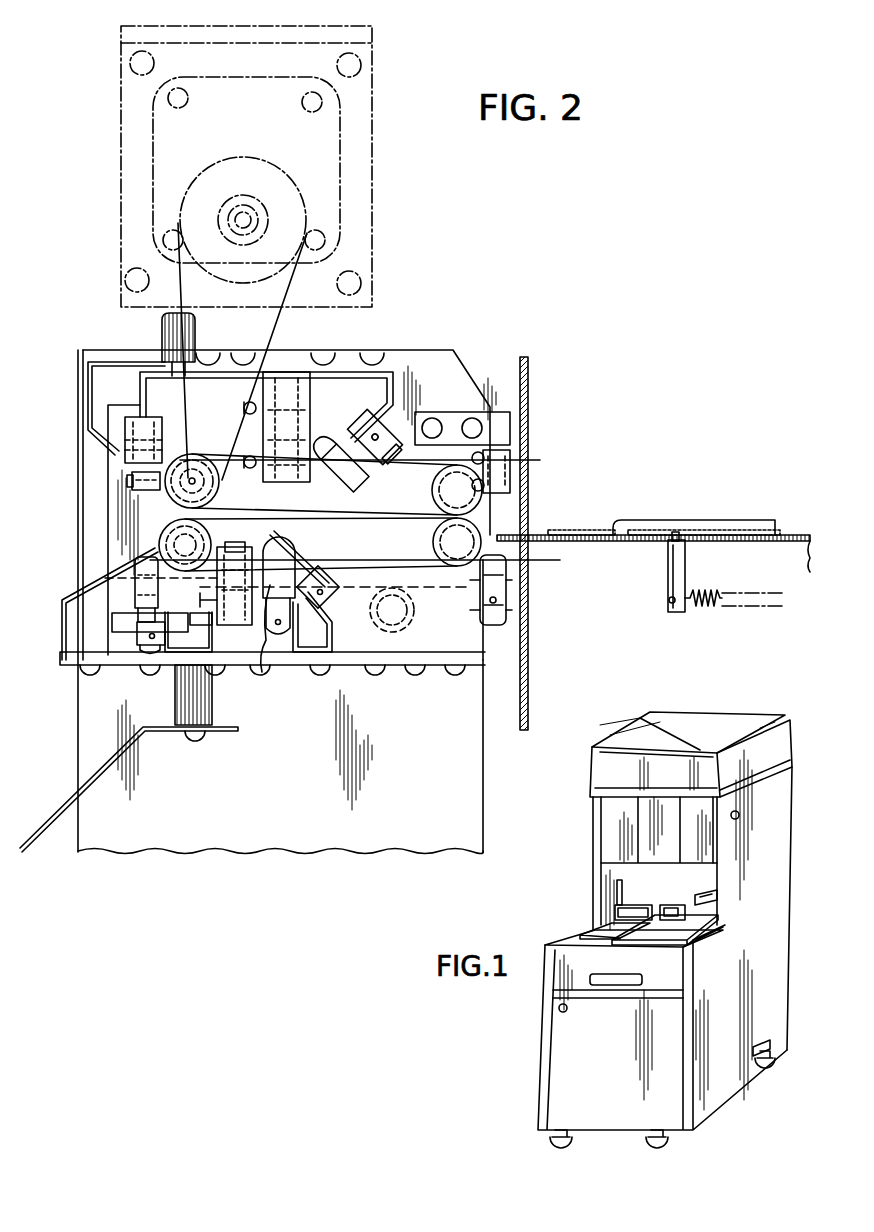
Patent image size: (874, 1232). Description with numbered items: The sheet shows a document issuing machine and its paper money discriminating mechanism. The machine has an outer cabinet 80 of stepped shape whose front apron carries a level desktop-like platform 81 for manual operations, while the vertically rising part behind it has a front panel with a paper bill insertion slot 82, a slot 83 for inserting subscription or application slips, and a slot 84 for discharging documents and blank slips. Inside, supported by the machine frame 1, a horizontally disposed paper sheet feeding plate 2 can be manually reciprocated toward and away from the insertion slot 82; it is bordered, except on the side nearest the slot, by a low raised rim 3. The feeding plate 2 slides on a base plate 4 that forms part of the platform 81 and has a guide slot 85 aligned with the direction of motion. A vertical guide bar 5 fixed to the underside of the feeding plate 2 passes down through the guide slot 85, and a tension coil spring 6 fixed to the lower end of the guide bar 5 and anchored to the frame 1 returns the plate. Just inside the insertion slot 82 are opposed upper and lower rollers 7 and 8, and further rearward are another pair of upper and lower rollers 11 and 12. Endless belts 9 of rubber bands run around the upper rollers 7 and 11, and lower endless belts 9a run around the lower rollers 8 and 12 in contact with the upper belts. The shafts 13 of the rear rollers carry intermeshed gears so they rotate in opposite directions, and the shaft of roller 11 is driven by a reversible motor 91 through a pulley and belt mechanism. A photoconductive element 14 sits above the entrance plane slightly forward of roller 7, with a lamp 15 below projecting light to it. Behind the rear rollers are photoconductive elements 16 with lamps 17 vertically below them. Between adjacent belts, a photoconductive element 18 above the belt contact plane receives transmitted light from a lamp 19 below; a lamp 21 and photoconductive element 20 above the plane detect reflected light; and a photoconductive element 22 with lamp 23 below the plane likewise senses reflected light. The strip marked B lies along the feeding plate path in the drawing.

In FIG. 2, the machine frame 1 is at (428, 362).
In FIG. 2, the paper sheet feeding plate 2 is at (635, 537).
In FIG. 2, the raised ridge or rim 3 is at (690, 520).
In FIG. 2, the base plate 4 is at (552, 541).
In FIG. 2, the vertical guide bar 5 is at (666, 580).
In FIG. 2, the tension coil spring 6 is at (757, 603).
In FIG. 2, the upper roller 7 is at (445, 493).
In FIG. 2, the lower roller 8 is at (448, 550).
In FIG. 2, the endless belts 9 is at (388, 458).
In FIG. 2, the endless belts 9a is at (370, 568).
In FIG. 2, the upper roller 11 is at (214, 487).
In FIG. 2, the lower roller 12 is at (172, 540).
In FIG. 2, the shaft 13 is at (196, 478).
In FIG. 2, the photoconductive element 14 is at (512, 468).
In FIG. 2, the lamp 15 is at (508, 582).
In FIG. 2, the photoconductive elements 16 is at (123, 462).
In FIG. 2, the lamps 17 is at (135, 572).
In FIG. 2, the photoconductive element 18 is at (286, 458).
In FIG. 2, the lamp 19 is at (258, 660).
In FIG. 2, the photoconductive element 20 is at (322, 452).
In FIG. 2, the lamp 21 is at (336, 494).
In FIG. 2, the photoconductive element 22 is at (235, 612).
In FIG. 2, the lamp 23 is at (305, 566).
In FIG. 1, the outer cabinet 80 is at (792, 857).
In FIG. 2, the platform 81 is at (790, 532).
In FIG. 1, the platform 81 is at (590, 940).
In FIG. 1, the paper bill insertion slot 82 is at (622, 905).
In FIG. 1, the slot 83 is at (718, 897).
In FIG. 1, the slot 84 is at (672, 905).
In FIG. 2, the guide slot 85 is at (672, 540).
In FIG. 2, the reversible motor 91 is at (366, 134).
In FIG. 2, the strip B is at (566, 528).